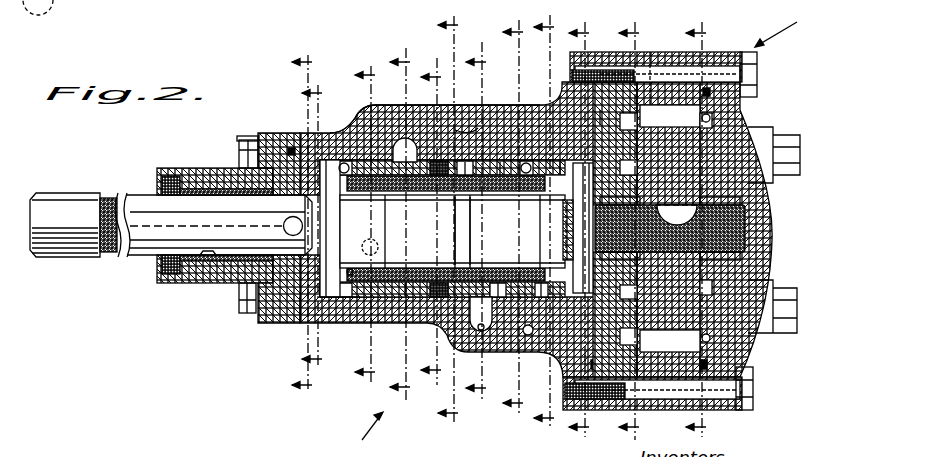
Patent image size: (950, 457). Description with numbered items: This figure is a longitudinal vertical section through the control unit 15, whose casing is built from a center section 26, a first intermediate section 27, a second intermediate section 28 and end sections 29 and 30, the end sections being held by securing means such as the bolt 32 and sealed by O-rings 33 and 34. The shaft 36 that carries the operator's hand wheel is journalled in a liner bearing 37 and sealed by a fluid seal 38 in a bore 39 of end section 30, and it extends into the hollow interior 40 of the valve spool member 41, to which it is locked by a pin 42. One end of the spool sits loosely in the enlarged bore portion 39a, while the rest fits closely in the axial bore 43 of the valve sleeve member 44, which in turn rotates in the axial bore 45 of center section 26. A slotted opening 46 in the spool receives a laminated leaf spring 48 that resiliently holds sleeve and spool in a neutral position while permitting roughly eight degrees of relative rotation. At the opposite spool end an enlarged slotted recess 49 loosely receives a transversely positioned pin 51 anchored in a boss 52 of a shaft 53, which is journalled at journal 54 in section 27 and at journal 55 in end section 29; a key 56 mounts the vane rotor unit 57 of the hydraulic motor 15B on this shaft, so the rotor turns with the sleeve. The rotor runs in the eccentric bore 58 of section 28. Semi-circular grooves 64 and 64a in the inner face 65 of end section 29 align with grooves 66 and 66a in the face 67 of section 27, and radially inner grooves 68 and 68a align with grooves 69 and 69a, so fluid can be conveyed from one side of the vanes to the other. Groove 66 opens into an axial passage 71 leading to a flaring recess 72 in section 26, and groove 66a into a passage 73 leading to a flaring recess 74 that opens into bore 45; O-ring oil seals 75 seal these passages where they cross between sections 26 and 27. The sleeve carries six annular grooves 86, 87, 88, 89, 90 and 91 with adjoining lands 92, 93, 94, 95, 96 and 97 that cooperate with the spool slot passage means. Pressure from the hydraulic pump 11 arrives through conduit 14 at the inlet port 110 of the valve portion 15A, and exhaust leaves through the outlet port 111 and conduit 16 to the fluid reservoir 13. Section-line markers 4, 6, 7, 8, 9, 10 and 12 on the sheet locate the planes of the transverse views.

The section line 4 is at (697, 228).
The section line 6 is at (631, 233).
The section line 7 is at (366, 225).
The section line 8 is at (312, 223).
The section line 9 is at (322, 227).
The section line 10 is at (405, 224).
The hydraulic pump 11 is at (438, 226).
The section line 12 is at (454, 221).
The fluid reservoir 13 is at (482, 226).
The conduit 14 is at (518, 217).
The control unit 15 is at (550, 222).
The valve portion 15A is at (363, 434).
The hydraulic motor 15B is at (777, 24).
The conduit 16 is at (584, 230).
The center section 26 is at (292, 325).
The first intermediate section 27 is at (615, 64).
The second intermediate section 28 is at (680, 52).
The end section 29 is at (738, 50).
The end section 30 is at (182, 288).
The bolt 32 is at (240, 147).
The O-ring 33 is at (718, 80).
The O-ring 34 is at (284, 140).
The shaft 36 is at (138, 196).
The liner bearing 37 is at (195, 190).
The fluid seal 38 is at (165, 170).
The bore 39 is at (207, 257).
The enlarged bore portion 39a is at (258, 135).
The hollow interior 40 is at (432, 220).
The valve spool member 41 is at (285, 278).
The pin 42 is at (285, 225).
The axial bore 43 is at (342, 192).
The valve sleeve member 44 is at (357, 112).
The axial bore 45 is at (356, 310).
The slotted opening 46 is at (347, 268).
The laminated leaf spring 48 is at (322, 325).
The enlarged slotted recess 49 is at (568, 196).
The transversely positioned pin 51 is at (580, 238).
The boss 52 is at (575, 215).
The shaft 53 is at (650, 257).
The journal 54 is at (622, 198).
The journal 55 is at (722, 170).
The key 56 is at (693, 178).
The vane rotor unit 57 is at (690, 128).
The bore 58 is at (650, 105).
The groove 64 is at (710, 117).
The groove 64a is at (710, 339).
The inner face 65 is at (705, 147).
The groove 66 is at (622, 120).
The groove 66a is at (620, 336).
The face 67 is at (670, 228).
The groove 68 is at (710, 160).
The groove 68a is at (712, 284).
The groove 69 is at (628, 180).
The groove 69a is at (618, 292).
The passage 71 is at (462, 128).
The recess 72 is at (407, 158).
The passage 73 is at (528, 336).
The recess 74 is at (489, 333).
The O-ring oil seal 75 is at (585, 355).
The annular groove 86 is at (291, 147).
The annular groove 87 is at (368, 270).
The annular groove 88 is at (407, 280).
The annular groove 89 is at (472, 297).
The annular groove 90 is at (507, 297).
The annular groove 91 is at (553, 297).
The land 92 is at (338, 154).
The land 93 is at (388, 160).
The land 94 is at (468, 158).
The land 95 is at (498, 158).
The land 96 is at (528, 162).
The land 97 is at (560, 160).
The inlet or pressure port opening 110 is at (379, 240).
The outlet or exhaust port opening 111 is at (446, 195).